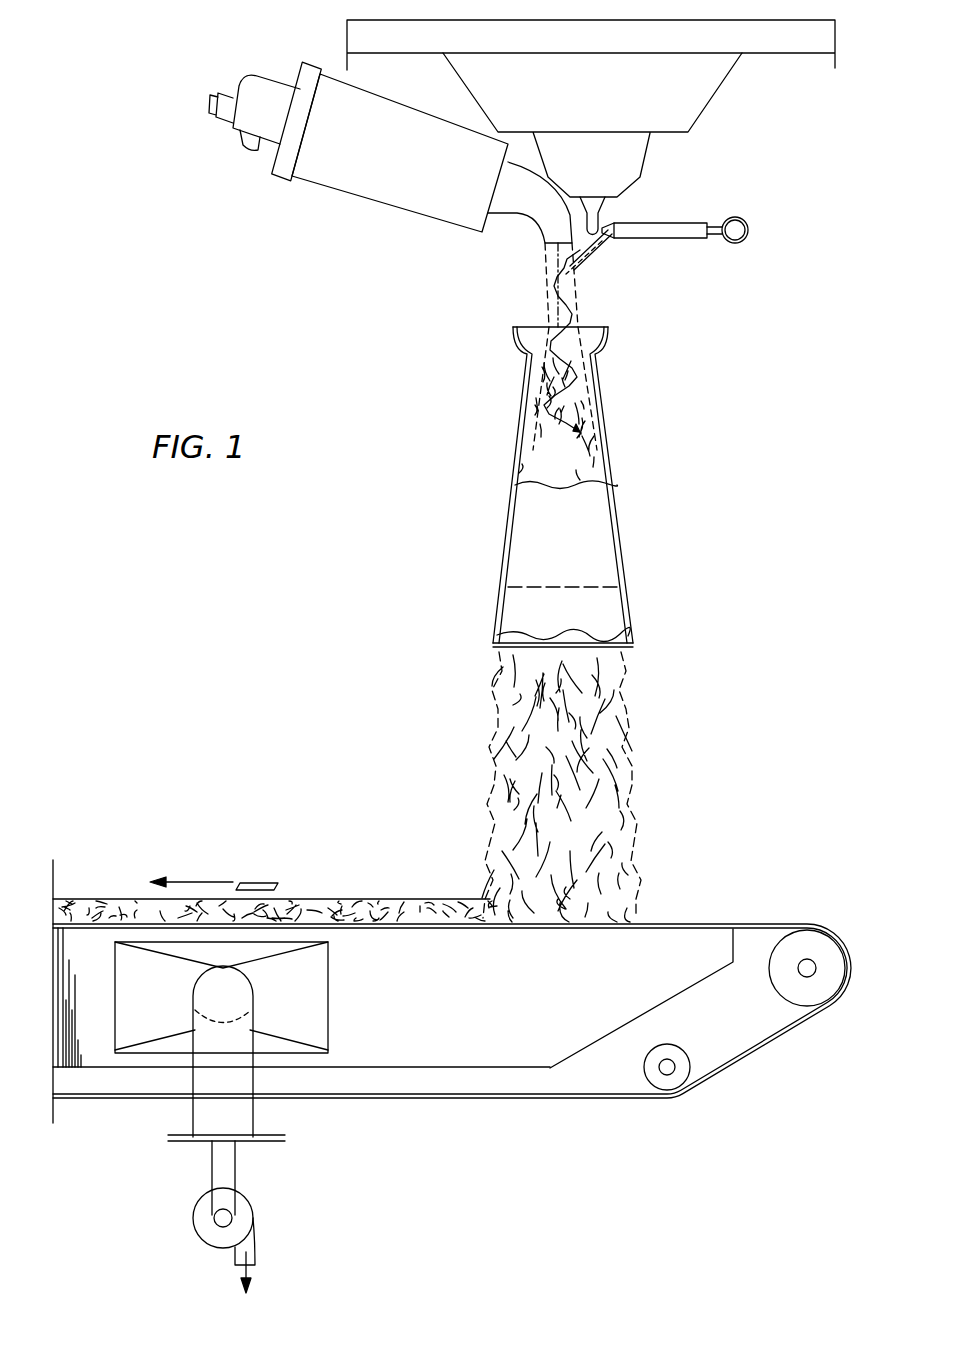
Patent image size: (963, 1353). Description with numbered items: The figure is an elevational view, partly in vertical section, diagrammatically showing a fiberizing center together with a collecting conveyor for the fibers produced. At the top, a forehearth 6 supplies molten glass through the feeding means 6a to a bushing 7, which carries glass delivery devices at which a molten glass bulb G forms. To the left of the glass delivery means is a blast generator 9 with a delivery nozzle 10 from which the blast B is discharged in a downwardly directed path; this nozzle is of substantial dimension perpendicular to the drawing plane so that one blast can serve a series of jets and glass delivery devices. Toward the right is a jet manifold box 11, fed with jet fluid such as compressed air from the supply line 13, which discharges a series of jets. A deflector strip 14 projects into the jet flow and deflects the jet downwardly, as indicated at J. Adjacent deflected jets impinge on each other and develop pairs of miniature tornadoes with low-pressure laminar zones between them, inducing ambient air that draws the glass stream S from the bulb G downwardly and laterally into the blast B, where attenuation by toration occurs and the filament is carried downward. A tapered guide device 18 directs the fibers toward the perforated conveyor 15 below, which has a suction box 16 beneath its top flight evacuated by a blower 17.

The forehearth 6 is at (813, 44).
The feeding means 6a is at (716, 91).
The bushing 7 is at (600, 208).
The blast generator 9 is at (337, 177).
The delivery nozzle 10 is at (516, 208).
The jet manifold box 11 is at (699, 240).
The supply line 13 is at (750, 231).
The deflector strip 14 is at (603, 223).
The perforated conveyor 15 is at (752, 924).
The suction box 16 is at (472, 1005).
The blower 17 is at (250, 1213).
The guide device 18 is at (510, 510).
The blast B is at (546, 288).
The molten glass bulb G is at (603, 242).
The deflected jet J is at (598, 250).
The glass stream S is at (572, 304).